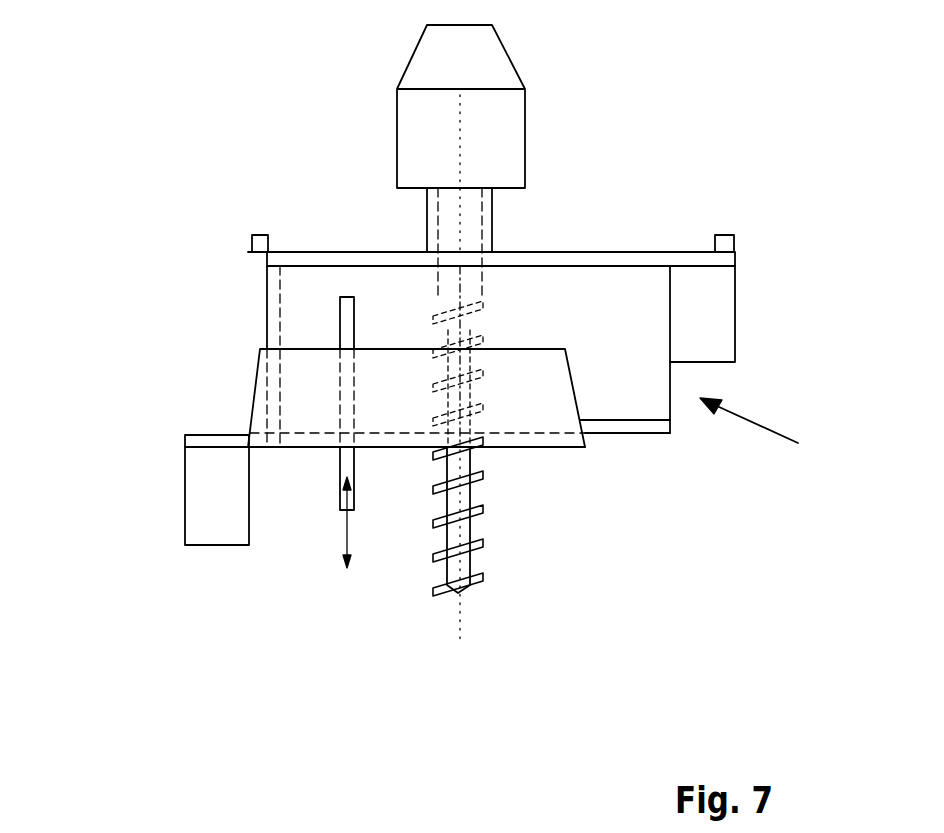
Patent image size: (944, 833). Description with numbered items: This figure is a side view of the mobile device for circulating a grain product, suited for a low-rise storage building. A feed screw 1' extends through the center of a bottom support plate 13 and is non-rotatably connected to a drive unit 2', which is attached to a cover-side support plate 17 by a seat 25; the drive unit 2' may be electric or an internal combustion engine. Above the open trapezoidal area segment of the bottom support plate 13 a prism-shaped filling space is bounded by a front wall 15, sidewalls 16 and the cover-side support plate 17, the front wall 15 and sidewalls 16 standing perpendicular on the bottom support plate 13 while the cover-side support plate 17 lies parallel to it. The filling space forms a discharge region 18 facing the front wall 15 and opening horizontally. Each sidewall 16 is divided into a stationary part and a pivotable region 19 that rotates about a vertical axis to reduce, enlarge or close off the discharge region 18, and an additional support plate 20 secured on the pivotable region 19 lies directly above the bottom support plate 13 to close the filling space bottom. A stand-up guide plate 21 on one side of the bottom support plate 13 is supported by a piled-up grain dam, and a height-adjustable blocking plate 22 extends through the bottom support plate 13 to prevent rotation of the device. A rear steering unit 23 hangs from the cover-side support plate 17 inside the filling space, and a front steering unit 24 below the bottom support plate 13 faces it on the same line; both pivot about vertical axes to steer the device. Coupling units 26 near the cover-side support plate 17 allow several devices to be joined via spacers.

The feed screw 1' is at (474, 453).
The drive unit 2' is at (461, 137).
The bottom support plate 13 is at (225, 442).
The front wall 15 is at (272, 323).
The sidewall 16 is at (392, 293).
The cover-side support plate 17 is at (583, 261).
The discharge region 18 is at (770, 430).
The pivotable region 19 is at (588, 318).
The additional support plate 20 is at (618, 428).
The guide plate 21 is at (528, 382).
The blocking plate 22 is at (345, 372).
The rear steering unit 23 is at (702, 315).
The front steering unit 24 is at (211, 502).
The seat 25 is at (487, 225).
The coupling unit 26 is at (260, 245).